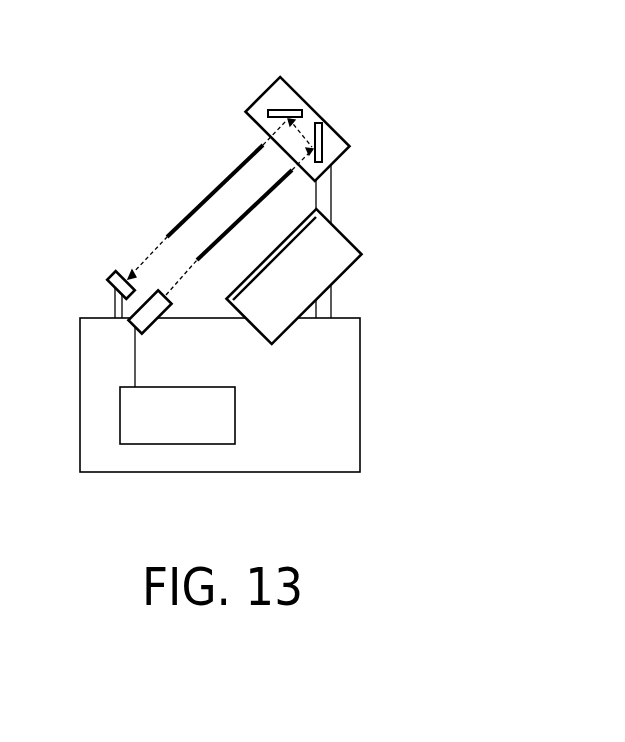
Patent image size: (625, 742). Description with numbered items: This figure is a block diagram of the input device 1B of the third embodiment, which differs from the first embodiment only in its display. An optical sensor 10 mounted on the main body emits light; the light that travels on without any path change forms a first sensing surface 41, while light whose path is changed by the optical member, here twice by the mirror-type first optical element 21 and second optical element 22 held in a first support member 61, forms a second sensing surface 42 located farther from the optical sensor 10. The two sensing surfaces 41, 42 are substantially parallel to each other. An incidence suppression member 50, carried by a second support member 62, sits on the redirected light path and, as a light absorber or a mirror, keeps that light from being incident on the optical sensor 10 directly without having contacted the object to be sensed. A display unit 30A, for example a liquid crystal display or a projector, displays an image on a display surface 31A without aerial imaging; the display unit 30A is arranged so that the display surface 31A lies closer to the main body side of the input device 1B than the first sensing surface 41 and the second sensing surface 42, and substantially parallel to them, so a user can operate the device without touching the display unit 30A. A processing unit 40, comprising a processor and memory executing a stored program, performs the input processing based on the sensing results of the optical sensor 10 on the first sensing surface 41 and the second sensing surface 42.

The input device 1B is at (414, 69).
The optical sensor 10 is at (155, 331).
The first optical element 21 is at (315, 122).
The second optical element 22 is at (277, 108).
The display unit 30A is at (364, 248).
The display surface 31A is at (292, 212).
The processing unit 40 is at (186, 387).
The first sensing surface 41 is at (200, 258).
The second sensing surface 42 is at (174, 231).
The incidence suppression member 50 is at (108, 274).
The first support member 61 is at (348, 140).
The second support member 62 is at (114, 296).